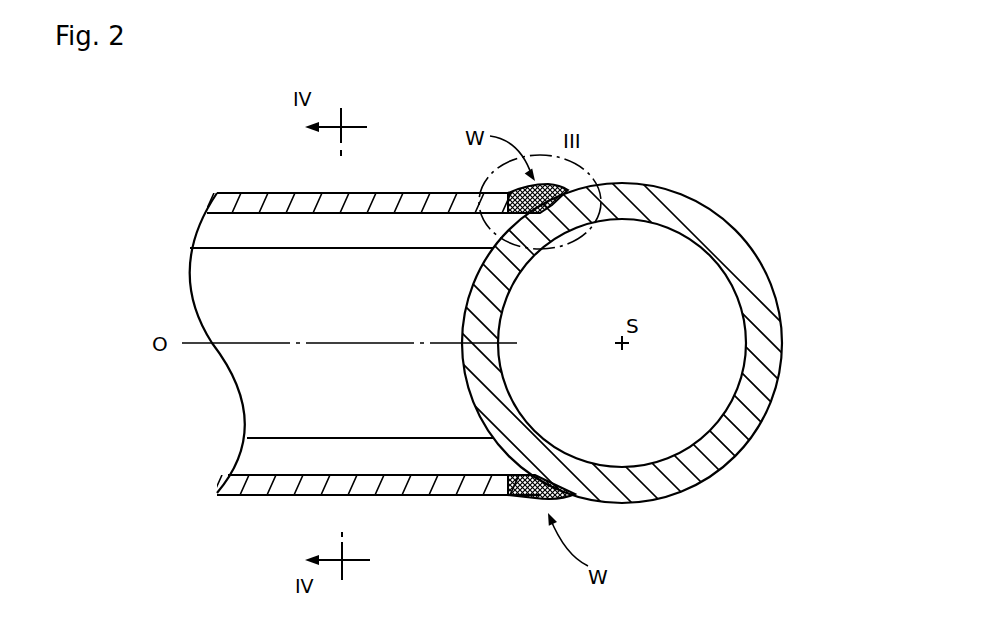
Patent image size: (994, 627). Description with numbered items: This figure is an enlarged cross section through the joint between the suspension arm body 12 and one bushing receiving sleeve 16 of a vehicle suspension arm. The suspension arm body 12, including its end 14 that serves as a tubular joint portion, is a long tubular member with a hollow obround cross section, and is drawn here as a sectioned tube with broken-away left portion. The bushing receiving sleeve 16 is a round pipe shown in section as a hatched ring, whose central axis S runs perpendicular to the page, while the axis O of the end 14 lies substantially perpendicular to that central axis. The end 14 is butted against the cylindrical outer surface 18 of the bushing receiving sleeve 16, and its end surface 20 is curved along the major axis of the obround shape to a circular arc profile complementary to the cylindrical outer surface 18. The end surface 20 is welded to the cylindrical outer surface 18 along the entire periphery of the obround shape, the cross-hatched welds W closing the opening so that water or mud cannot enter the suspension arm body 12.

The suspension arm body 12 is at (355, 382).
The end 14 is at (425, 486).
The bushing receiving sleeve 16 is at (591, 340).
The cylindrical outer surface 18 is at (663, 188).
The end surface 20 is at (465, 372).